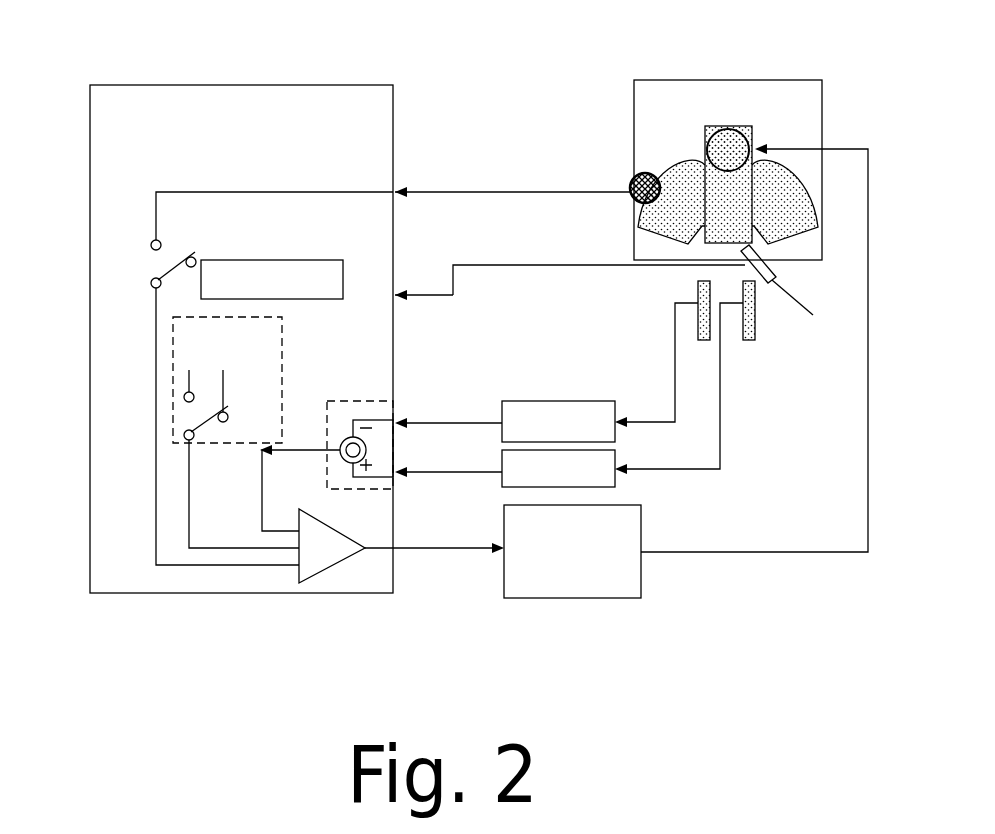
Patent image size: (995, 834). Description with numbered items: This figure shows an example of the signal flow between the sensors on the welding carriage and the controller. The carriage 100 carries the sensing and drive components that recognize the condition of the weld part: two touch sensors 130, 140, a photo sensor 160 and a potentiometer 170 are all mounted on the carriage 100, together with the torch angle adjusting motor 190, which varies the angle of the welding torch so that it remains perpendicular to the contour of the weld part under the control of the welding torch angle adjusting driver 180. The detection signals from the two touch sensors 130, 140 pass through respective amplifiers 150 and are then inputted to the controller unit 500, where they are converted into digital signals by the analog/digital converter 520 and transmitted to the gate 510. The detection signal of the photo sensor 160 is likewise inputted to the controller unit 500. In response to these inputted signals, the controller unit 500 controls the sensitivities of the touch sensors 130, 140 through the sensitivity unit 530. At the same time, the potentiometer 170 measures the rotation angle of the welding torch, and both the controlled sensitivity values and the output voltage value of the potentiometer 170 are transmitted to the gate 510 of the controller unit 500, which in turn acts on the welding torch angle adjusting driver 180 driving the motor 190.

The carriage 100 is at (805, 80).
The touch sensor 130 is at (698, 293).
The touch sensor 140 is at (755, 325).
The amplifier 150 is at (585, 400).
The photo sensor 160 is at (777, 272).
The potentiometer 170 is at (633, 174).
The welding torch angle adjusting driver 180 is at (641, 583).
The torch angle adjusting motor 190 is at (725, 128).
The controller unit 500 is at (322, 80).
The gate 510 is at (342, 560).
The analog/digital converter 520 is at (370, 400).
The sensitivity unit 530 is at (173, 372).